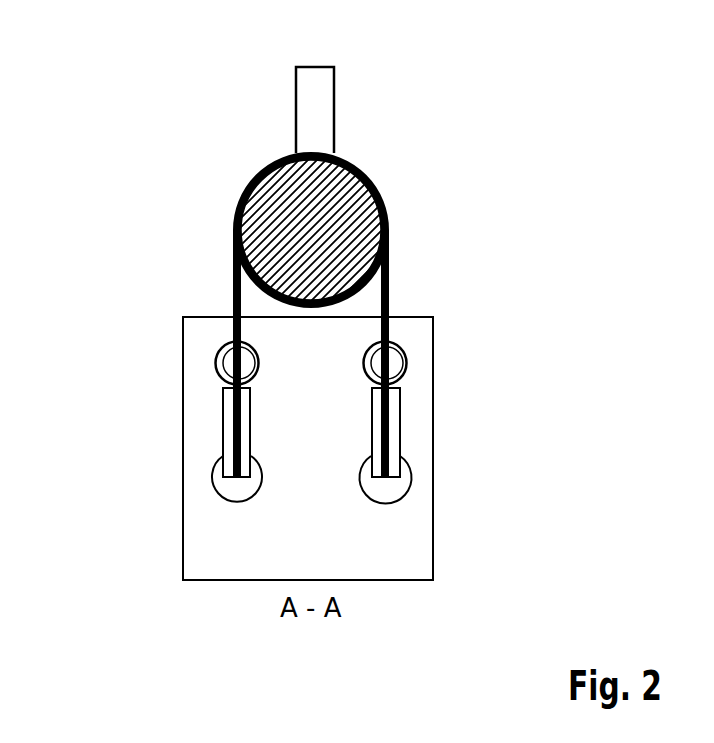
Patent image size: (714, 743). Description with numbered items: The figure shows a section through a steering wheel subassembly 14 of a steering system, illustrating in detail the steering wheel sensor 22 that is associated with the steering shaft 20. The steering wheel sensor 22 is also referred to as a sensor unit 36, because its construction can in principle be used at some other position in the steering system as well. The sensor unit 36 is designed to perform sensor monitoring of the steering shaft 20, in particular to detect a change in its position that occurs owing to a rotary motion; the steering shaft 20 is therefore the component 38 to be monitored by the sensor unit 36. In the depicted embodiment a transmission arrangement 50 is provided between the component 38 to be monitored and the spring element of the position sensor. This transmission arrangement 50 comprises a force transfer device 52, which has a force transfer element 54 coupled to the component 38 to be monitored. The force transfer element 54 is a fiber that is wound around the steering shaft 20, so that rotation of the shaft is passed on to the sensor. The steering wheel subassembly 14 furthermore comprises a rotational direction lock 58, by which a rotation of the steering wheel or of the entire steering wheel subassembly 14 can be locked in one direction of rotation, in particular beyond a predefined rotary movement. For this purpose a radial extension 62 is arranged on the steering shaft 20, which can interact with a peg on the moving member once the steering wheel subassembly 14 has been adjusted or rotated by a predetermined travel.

The steering wheel subassembly 14 is at (486, 73).
The steering shaft 20 is at (311, 330).
The steering wheel sensor 22 is at (172, 206).
The sensor unit 36 is at (146, 275).
The component to be monitored 38 is at (337, 262).
The transmission arrangement 50 is at (248, 170).
The force transfer device 52 is at (310, 202).
The force transfer element 54 is at (233, 275).
The rotational direction lock 58 is at (352, 58).
The radial extension 62 is at (320, 88).